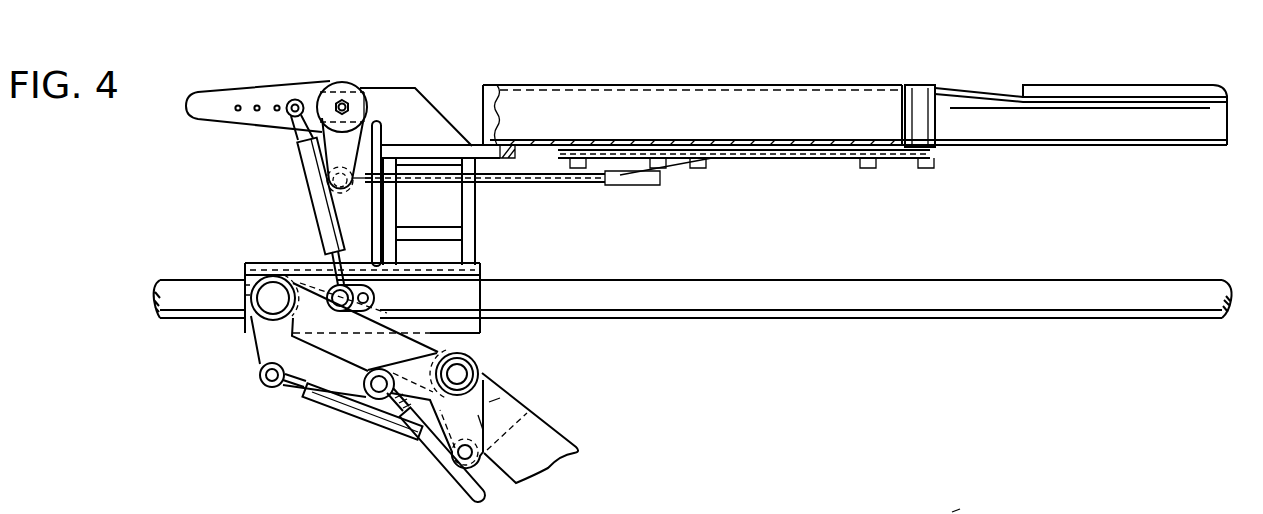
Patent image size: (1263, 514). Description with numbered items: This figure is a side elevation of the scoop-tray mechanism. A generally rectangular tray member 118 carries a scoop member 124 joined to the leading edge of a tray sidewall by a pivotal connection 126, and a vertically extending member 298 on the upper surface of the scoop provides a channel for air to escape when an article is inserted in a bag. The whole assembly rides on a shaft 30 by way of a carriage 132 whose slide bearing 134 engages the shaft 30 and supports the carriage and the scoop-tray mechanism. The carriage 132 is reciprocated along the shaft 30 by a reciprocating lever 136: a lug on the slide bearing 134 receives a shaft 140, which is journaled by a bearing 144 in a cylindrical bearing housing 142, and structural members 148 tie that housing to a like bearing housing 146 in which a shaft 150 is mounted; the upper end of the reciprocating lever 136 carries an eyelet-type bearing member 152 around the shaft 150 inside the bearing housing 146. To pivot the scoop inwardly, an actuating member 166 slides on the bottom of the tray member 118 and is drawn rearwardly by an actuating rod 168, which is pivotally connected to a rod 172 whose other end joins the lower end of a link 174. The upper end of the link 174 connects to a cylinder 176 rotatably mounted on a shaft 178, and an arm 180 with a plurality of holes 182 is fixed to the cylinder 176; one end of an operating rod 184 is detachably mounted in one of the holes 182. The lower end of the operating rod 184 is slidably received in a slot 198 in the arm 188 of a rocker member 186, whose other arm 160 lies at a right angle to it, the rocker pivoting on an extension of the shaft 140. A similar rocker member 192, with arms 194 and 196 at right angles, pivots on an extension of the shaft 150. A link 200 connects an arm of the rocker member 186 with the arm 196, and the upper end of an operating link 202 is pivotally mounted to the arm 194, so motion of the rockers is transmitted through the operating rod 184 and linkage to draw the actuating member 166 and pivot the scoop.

The shaft 30 is at (818, 278).
The tray member 118 is at (806, 86).
The scoop member 124 is at (1088, 146).
The pivotal connection 126 is at (975, 508).
The carriage 132 is at (495, 248).
The slide bearing 134 is at (258, 262).
The reciprocating lever 136 is at (560, 442).
The shaft 140 is at (268, 302).
The bearing housing 142 is at (250, 285).
The bearing 144 is at (254, 310).
The bearing housing 146 is at (465, 356).
The structural members 148 is at (397, 328).
The shaft 150 is at (472, 372).
The eyelet-type bearing member 152 is at (478, 360).
The arm 160 is at (262, 368).
The actuating member 166 is at (586, 165).
The actuating rod 168 is at (534, 190).
The rod 172 is at (339, 195).
The link 174 is at (325, 174).
The cylinder 176 is at (320, 96).
The shaft 178 is at (345, 104).
The arm 180 is at (232, 90).
The holes 182 is at (272, 142).
The operating rod 184 is at (302, 170).
The rocker member 186 is at (244, 366).
The arm 188 is at (326, 270).
The rocker member 192 is at (490, 395).
The arm 194 is at (400, 372).
The arm 196 is at (480, 420).
The slot 198 is at (370, 297).
The link 200 is at (372, 420).
The operating link 202 is at (468, 494).
The vertically extending member 298 is at (1066, 84).